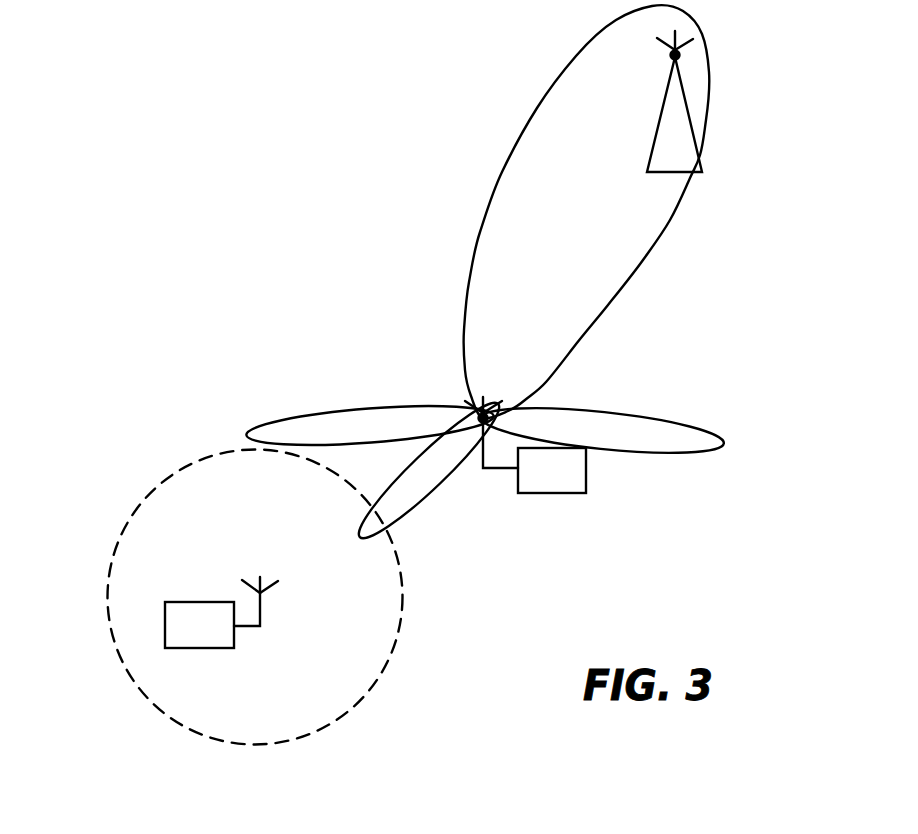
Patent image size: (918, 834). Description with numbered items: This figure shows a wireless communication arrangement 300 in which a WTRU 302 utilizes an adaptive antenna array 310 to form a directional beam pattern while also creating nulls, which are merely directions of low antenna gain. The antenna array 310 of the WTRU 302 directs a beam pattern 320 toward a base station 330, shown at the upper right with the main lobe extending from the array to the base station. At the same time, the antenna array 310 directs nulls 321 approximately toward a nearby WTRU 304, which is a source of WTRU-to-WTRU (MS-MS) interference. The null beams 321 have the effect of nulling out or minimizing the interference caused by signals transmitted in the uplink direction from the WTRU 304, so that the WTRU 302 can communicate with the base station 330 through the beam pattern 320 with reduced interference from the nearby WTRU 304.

The wireless communication system 300 is at (263, 123).
The WTRU 302 is at (553, 493).
The WTRU 304 is at (165, 632).
The antenna array 310 is at (485, 416).
The beam pattern 320 is at (484, 212).
The nulls 321 is at (482, 416).
The base station 330 is at (705, 152).